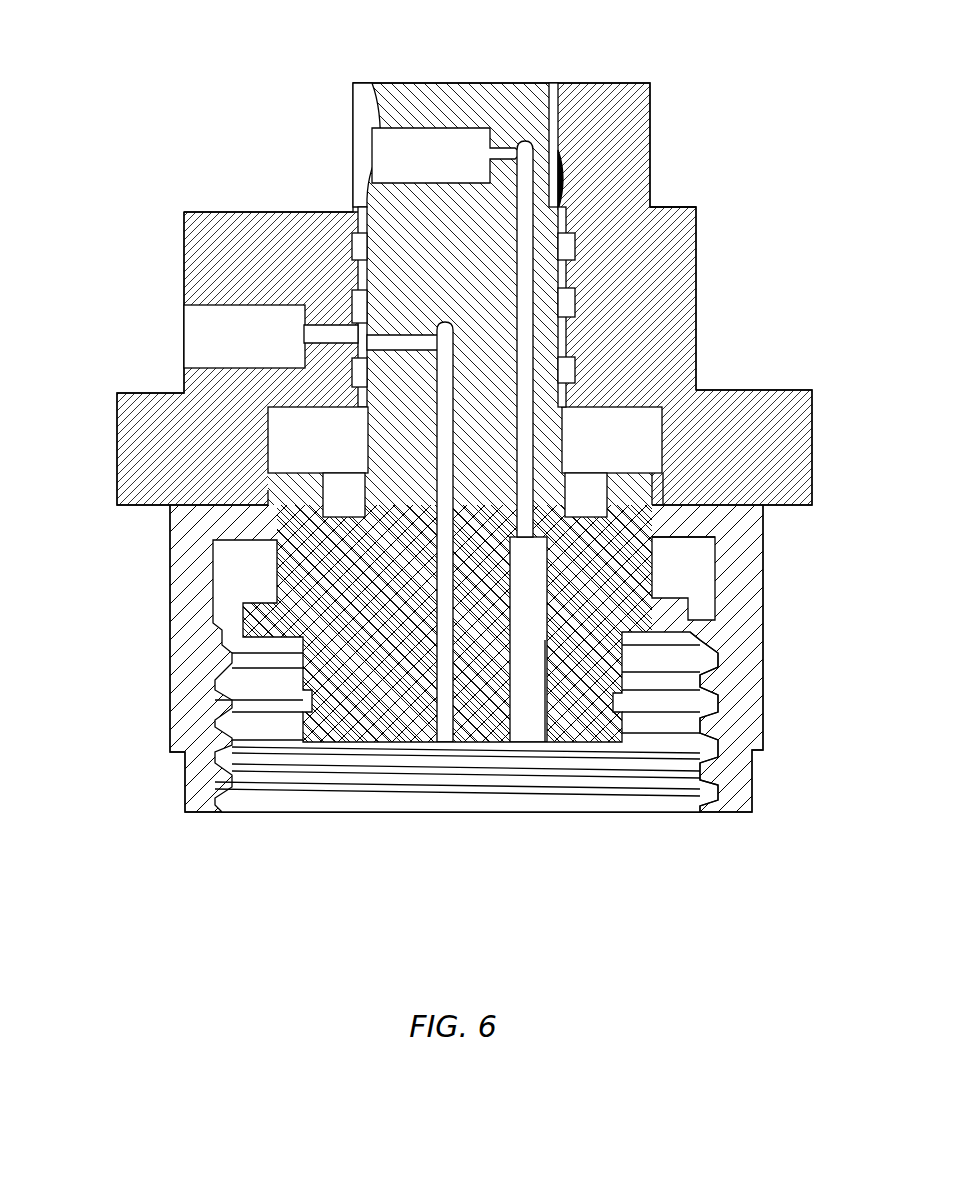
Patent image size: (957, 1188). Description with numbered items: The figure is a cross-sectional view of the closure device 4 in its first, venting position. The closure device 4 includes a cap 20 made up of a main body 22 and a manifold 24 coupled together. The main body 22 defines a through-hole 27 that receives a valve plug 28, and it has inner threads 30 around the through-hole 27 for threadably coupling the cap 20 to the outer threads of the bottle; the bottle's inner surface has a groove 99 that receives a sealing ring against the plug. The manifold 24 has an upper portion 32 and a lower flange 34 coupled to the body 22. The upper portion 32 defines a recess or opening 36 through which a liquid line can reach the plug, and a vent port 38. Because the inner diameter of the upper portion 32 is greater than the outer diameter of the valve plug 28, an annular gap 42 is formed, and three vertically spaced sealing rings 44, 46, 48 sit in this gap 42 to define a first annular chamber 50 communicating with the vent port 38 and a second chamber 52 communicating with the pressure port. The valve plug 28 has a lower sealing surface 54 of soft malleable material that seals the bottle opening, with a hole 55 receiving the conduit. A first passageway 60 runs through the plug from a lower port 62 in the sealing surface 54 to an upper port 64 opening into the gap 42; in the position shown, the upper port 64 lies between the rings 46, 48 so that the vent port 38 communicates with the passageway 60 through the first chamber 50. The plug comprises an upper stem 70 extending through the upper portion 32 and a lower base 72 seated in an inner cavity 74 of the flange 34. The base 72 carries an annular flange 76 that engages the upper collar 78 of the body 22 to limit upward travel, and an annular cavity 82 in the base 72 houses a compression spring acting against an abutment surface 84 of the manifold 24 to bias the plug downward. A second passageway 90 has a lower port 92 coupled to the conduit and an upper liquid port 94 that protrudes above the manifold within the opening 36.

The closure device 4 is at (703, 60).
The cap 20 is at (52, 0).
The main body 22 is at (152, 712).
The manifold 24 is at (204, 194).
The through-hole 27 is at (451, 782).
The valve plug 28 is at (519, 63).
The inner threads 30 is at (697, 793).
The upper portion 32 is at (697, 306).
The lower flange 34 is at (800, 390).
The recess or opening 36 is at (353, 107).
The vent port 38 is at (197, 342).
The annular gap 42 is at (363, 210).
The sealing ring 44 is at (575, 248).
The sealing ring 46 is at (575, 305).
The sealing ring 48 is at (575, 375).
The first annular chamber 50 is at (360, 338).
The second chamber 52 is at (357, 277).
The lower sealing surface 54 is at (533, 630).
The hole 55 is at (498, 765).
The first passageway 60 is at (443, 523).
The lower port 62 is at (448, 743).
The upper port 64 is at (392, 343).
The upper stem 70 is at (397, 412).
The lower base 72 is at (570, 630).
The inner cavity 74 is at (690, 555).
The annular flange 76 is at (670, 628).
The upper collar 78 is at (690, 528).
The annular cavity 82 is at (343, 495).
The abutment surface 84 is at (630, 407).
The second passageway 90 is at (527, 197).
The lower port 92 is at (523, 520).
The liquid port 94 is at (447, 145).
The groove 99 is at (303, 708).